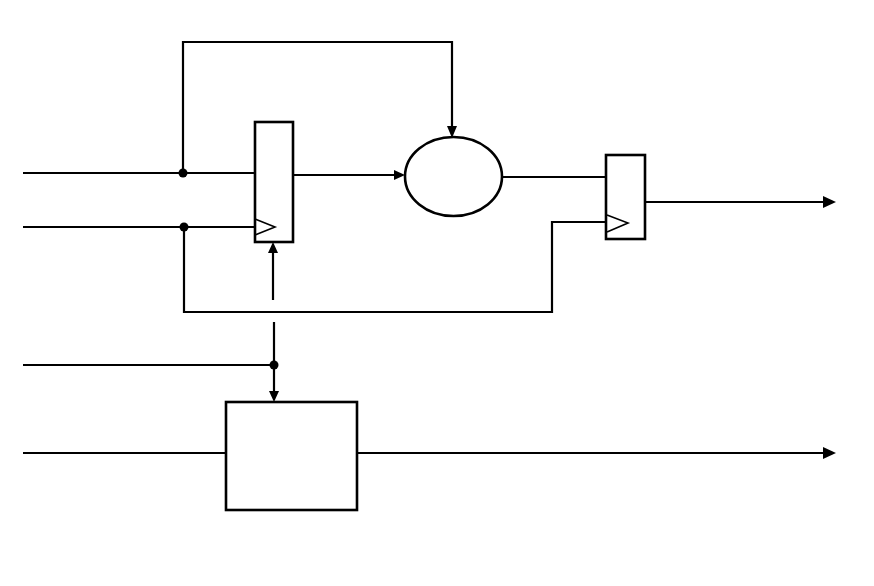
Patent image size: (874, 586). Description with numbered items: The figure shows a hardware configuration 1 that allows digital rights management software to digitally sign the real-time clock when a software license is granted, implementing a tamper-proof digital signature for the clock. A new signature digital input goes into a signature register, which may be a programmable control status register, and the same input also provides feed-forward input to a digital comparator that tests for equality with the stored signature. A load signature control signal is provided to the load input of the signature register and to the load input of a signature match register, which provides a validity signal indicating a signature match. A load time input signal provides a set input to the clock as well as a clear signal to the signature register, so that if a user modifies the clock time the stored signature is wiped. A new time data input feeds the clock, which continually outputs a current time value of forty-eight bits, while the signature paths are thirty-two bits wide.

The signature and time capture circuit (Figure 1) 1 is at (429, 328).